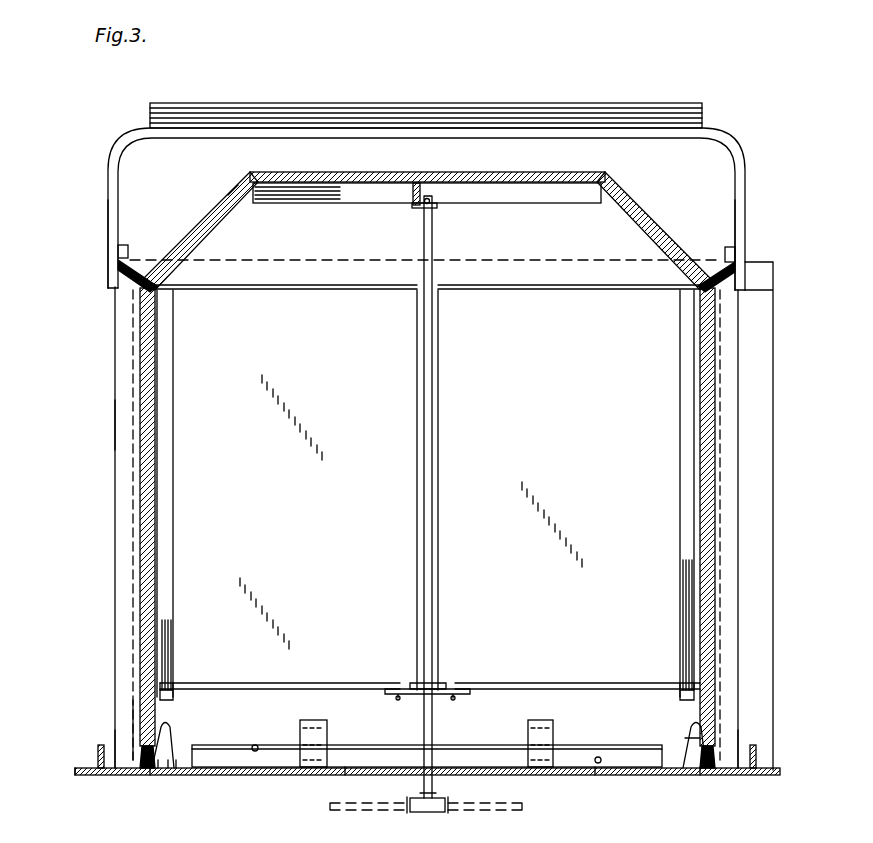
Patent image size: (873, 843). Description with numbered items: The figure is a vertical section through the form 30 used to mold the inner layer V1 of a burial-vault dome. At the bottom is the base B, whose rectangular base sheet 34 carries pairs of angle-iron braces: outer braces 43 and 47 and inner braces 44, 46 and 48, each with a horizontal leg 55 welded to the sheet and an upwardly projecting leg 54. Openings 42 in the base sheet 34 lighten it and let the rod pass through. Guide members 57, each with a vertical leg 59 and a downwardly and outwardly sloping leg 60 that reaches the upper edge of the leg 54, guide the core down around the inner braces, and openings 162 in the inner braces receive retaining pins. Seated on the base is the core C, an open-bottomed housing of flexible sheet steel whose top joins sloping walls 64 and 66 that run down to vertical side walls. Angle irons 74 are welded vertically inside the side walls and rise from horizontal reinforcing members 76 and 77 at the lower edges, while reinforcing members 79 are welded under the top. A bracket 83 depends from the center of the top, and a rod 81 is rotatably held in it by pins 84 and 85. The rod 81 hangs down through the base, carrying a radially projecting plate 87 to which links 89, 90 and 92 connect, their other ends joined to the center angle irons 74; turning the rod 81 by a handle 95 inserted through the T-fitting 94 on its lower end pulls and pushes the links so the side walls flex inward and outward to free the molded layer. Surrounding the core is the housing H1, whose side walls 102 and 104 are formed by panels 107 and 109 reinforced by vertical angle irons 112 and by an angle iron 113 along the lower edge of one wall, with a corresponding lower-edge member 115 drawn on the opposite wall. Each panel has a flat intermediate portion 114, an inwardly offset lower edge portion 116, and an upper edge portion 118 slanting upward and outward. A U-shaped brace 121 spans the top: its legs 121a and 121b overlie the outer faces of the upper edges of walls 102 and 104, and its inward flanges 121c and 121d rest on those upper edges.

The form 30 is at (741, 116).
The U-shaped brace 121 is at (756, 157).
The leg 121a is at (108, 232).
The leg 121b is at (747, 204).
The flange 121c is at (124, 245).
The flange 121d is at (725, 250).
The core C is at (236, 222).
The sloping wall 64 is at (200, 246).
The sloping wall 66 is at (645, 232).
The inner layer V1 is at (216, 206).
The reinforcing member 79 is at (542, 204).
The pin 84 is at (430, 200).
The bracket 83 is at (437, 206).
The pin 85 is at (421, 210).
The rod 81 is at (434, 248).
The housing H1 is at (104, 359).
The angle iron 112 is at (125, 421).
The side wall 102 is at (130, 454).
The side wall 104 is at (732, 578).
The panel 109 is at (720, 630).
The panel 107 is at (145, 476).
The intermediate portion 114 is at (145, 584).
The upper edge portion 118 is at (126, 283).
The angle iron 74 is at (170, 482).
The link 90 is at (338, 683).
The link 92 is at (560, 669).
The link 89 is at (424, 700).
The plate 87 is at (440, 682).
The reinforcing member 76 is at (172, 690).
The reinforcing member 77 is at (680, 690).
The brace 46 is at (464, 754).
The guide member 57 is at (325, 721).
The sloping leg 60 is at (165, 724).
The vertical leg 54 is at (100, 748).
The vertical leg 59 is at (555, 737).
The opening 162 is at (258, 745).
The base B is at (254, 769).
The brace 43 is at (98, 758).
The brace 47 is at (758, 758).
The angle iron 113 is at (120, 726).
The lower wall 115 is at (736, 748).
The lower edge portion 116 is at (138, 702).
The horizontal leg 55 is at (82, 768).
The brace 44 is at (178, 771).
The opening 42 is at (346, 775).
The base sheet 34 is at (596, 775).
The brace 48 is at (698, 774).
The T-fitting 94 is at (424, 813).
The handle 95 is at (512, 812).